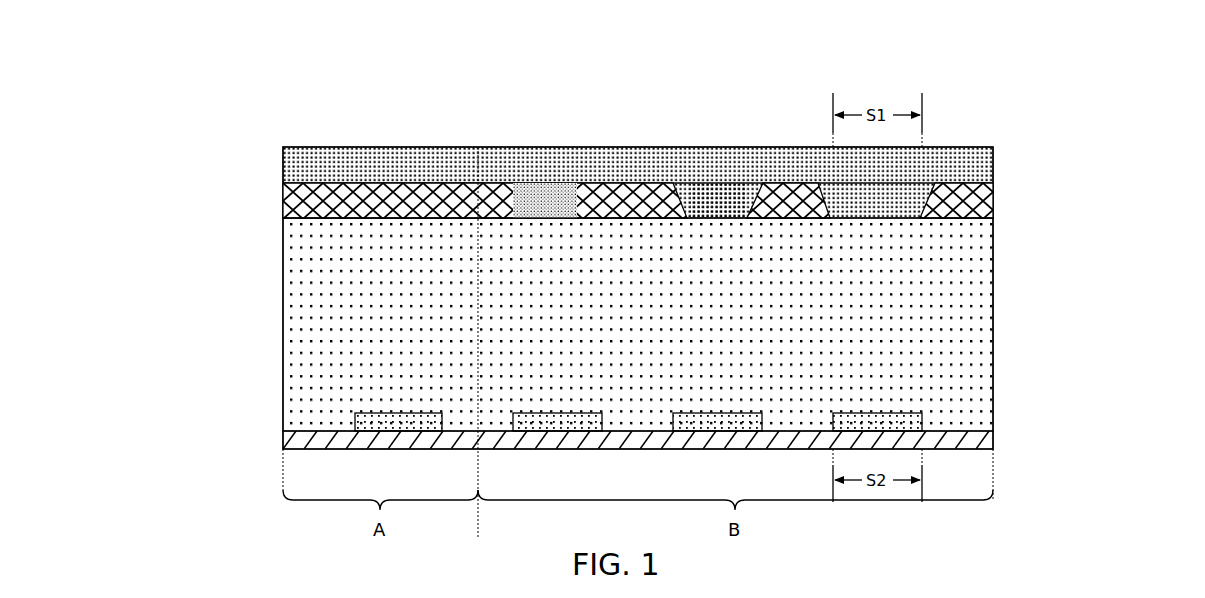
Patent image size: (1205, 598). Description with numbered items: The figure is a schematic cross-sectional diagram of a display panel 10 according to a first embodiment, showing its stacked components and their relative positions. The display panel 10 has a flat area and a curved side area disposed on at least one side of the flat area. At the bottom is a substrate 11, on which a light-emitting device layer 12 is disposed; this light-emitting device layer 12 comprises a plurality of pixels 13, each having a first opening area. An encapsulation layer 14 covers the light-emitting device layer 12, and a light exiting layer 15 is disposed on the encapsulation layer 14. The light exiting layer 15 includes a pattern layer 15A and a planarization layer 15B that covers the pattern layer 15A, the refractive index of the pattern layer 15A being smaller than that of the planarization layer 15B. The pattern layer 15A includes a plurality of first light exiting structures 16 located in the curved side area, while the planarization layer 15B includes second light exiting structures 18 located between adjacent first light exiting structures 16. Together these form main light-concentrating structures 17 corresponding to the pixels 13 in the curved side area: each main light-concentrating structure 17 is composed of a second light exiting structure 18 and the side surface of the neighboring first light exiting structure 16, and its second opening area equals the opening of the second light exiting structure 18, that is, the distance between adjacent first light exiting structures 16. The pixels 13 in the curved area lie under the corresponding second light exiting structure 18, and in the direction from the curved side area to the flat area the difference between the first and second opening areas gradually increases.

The display panel 10 is at (176, 92).
The substrate 11 is at (993, 431).
The light-emitting device layer 12 is at (262, 413).
The pixels 13 is at (875, 413).
The encapsulation layer 14 is at (993, 322).
The light exiting layer 15 is at (1010, 147).
The pattern layer 15A is at (265, 183).
The planarization layer 15B is at (210, 147).
The first light exiting structures 16 is at (962, 200).
The main light-concentrating structures 17 is at (715, 157).
The second light exiting structures 18 is at (548, 190).